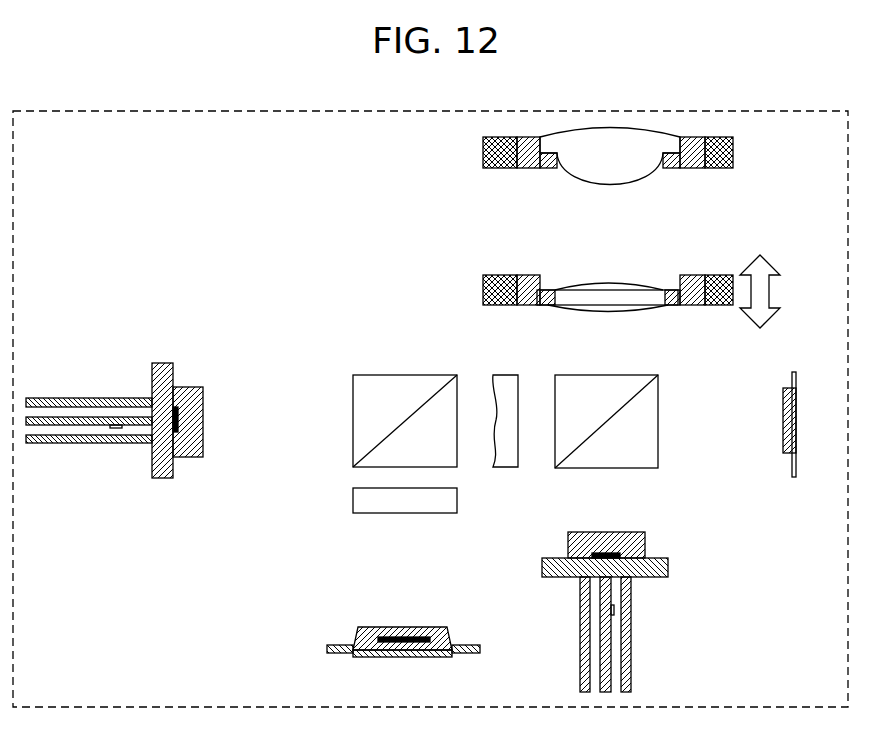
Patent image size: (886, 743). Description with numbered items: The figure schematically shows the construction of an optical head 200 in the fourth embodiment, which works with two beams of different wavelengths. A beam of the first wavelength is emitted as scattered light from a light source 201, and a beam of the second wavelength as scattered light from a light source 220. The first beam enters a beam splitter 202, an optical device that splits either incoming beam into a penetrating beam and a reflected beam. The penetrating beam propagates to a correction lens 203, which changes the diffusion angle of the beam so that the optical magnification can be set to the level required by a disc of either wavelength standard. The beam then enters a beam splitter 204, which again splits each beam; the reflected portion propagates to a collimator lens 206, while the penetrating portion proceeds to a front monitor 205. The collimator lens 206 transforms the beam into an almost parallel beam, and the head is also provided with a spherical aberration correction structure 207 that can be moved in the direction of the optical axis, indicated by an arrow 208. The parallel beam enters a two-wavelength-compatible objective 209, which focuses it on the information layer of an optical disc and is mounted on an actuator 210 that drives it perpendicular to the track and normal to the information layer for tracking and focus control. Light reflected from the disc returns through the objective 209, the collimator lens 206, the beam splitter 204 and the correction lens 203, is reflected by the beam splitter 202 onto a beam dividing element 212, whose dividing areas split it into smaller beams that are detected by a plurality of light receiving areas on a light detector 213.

The optical head 200 is at (753, 111).
The light source 201 is at (159, 363).
The beam splitter 202 is at (353, 399).
The correction lens 203 is at (503, 375).
The beam splitter 204 is at (660, 437).
The front monitor 205 is at (795, 470).
The collimator lens 206 is at (625, 300).
The spherical aberration correction structure 207 is at (483, 292).
The arrow 208 is at (778, 293).
The 2-wavelength-compatible objective 209 is at (622, 190).
The actuator 210 is at (483, 153).
The beam dividing element 212 is at (353, 503).
The light detector 213 is at (327, 649).
The light source 220 is at (668, 567).